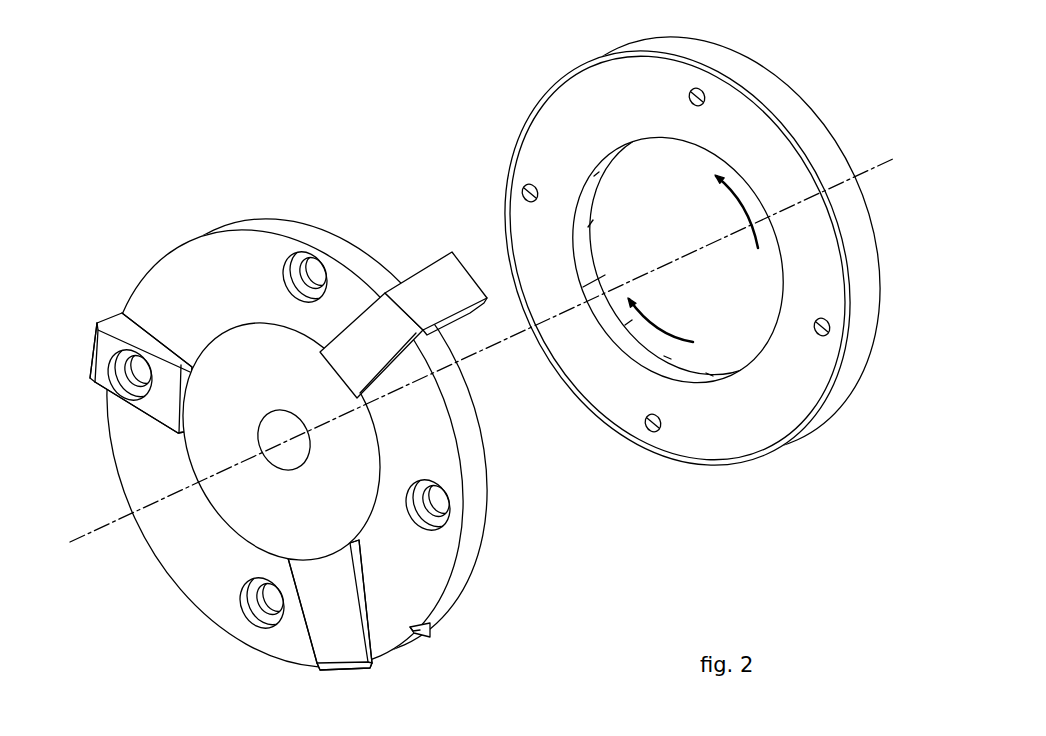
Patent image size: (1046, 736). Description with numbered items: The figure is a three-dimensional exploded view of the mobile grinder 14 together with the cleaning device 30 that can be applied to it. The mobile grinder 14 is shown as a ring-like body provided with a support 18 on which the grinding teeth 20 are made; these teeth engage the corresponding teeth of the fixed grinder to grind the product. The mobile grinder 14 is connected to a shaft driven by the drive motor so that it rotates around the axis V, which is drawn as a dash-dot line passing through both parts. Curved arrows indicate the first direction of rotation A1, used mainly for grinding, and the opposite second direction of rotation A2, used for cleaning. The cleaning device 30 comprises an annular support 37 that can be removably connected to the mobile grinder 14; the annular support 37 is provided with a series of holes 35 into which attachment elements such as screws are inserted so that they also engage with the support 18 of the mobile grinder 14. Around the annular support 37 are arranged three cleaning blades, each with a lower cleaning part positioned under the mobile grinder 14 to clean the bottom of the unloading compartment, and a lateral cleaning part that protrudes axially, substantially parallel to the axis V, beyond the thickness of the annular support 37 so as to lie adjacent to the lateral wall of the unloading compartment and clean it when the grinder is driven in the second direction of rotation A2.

The mobile grinder 14 is at (692, 260).
The support 18 is at (630, 95).
The grinding teeth 20 is at (595, 253).
The cleaning device 30 is at (295, 443).
The holes 35 is at (300, 268).
The annular support 37 is at (432, 440).
The first direction of rotation A1 is at (737, 200).
The second direction of rotation A2 is at (673, 330).
The axis V is at (109, 524).